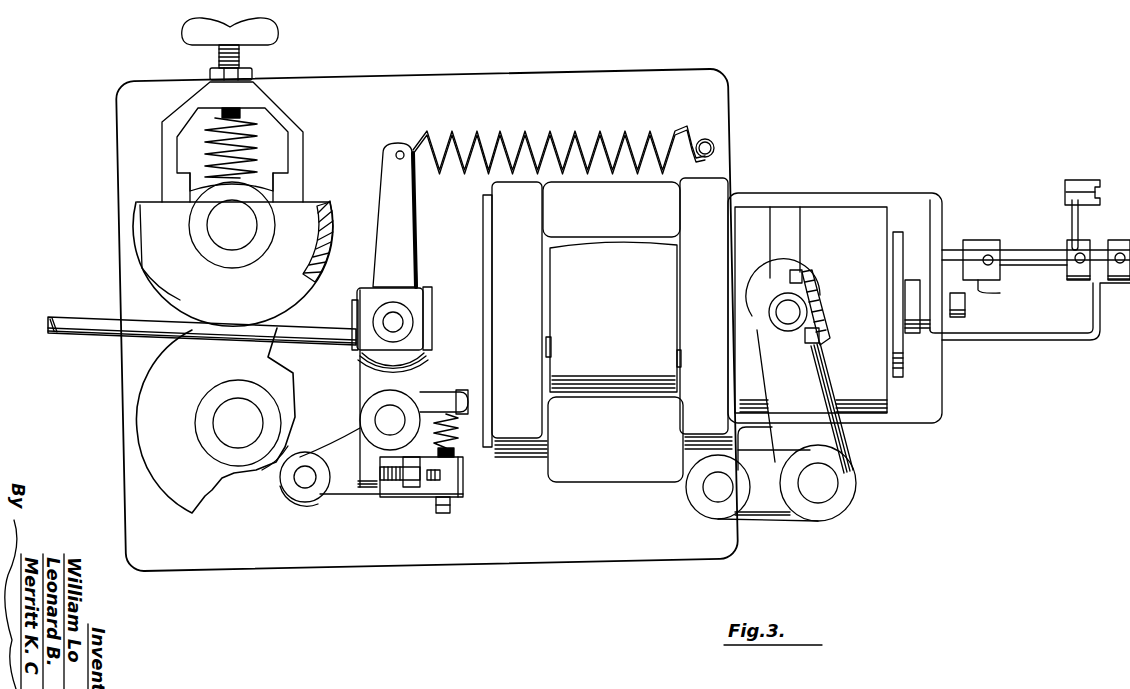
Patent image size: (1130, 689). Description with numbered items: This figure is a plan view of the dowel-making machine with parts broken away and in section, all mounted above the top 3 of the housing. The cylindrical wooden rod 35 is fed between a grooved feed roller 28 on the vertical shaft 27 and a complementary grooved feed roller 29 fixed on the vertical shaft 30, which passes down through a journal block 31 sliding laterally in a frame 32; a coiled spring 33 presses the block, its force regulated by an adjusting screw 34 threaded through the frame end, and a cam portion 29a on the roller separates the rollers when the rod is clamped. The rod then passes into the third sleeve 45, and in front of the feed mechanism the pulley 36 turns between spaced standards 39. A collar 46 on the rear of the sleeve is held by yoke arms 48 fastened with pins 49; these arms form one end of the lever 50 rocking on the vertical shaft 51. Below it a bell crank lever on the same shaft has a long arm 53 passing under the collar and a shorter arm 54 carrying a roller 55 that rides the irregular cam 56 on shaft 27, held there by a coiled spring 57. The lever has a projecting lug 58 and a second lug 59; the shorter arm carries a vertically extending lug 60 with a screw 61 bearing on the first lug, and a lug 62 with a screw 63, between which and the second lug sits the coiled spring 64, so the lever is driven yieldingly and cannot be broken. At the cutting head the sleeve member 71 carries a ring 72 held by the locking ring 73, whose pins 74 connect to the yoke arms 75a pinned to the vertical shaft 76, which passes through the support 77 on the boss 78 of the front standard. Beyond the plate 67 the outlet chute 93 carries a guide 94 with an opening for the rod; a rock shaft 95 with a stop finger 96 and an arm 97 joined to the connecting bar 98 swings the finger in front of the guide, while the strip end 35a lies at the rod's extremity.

The top 3 is at (455, 562).
The vertical shaft 27 is at (227, 420).
The grooved feed roller 28 is at (163, 470).
The complementary grooved feed roller 29 is at (315, 238).
The cam portion 29a is at (153, 280).
The vertical shaft 30 is at (233, 243).
The journal block 31 is at (277, 187).
The frame 32 is at (300, 147).
The coiled spring 33 is at (257, 138).
The adjusting screw 34 is at (243, 58).
The cylindrical rod 35 is at (97, 335).
The strip end 35a is at (967, 312).
The pulley 36 is at (620, 363).
The standards 39 is at (710, 192).
The third sleeve 45 is at (426, 315).
The collar 46 is at (363, 290).
The yoke arms 48 is at (385, 352).
The pins 49 is at (360, 333).
The lever 50 is at (412, 390).
The vertical shaft 51 is at (393, 420).
The long arm 53 is at (403, 238).
The shorter arm 54 is at (347, 482).
The roller 55 is at (300, 503).
The cam 56 is at (240, 487).
The coiled spring 57 is at (503, 133).
The projecting lug 58 is at (370, 482).
The second lug 59 is at (468, 402).
The vertically extending lug 60 is at (395, 480).
The screw 61 is at (412, 487).
The lug 62 is at (465, 497).
The screw 63 is at (447, 514).
The coiled spring 64 is at (457, 432).
The plate 67 is at (897, 238).
The sleeve member 71 is at (840, 220).
The ring 72 is at (783, 220).
The locking ring 73 is at (747, 228).
The pins 74 is at (780, 312).
The yoke arms 75a is at (813, 372).
The vertical shaft 76 is at (818, 490).
The support 77 is at (770, 503).
The boss 78 is at (693, 457).
The outlet chute 93 is at (1022, 338).
The guide 94 is at (913, 298).
The rock shaft 95 is at (1017, 256).
The stop finger 96 is at (972, 257).
The arm 97 is at (1072, 215).
The connecting bar 98 is at (1083, 181).